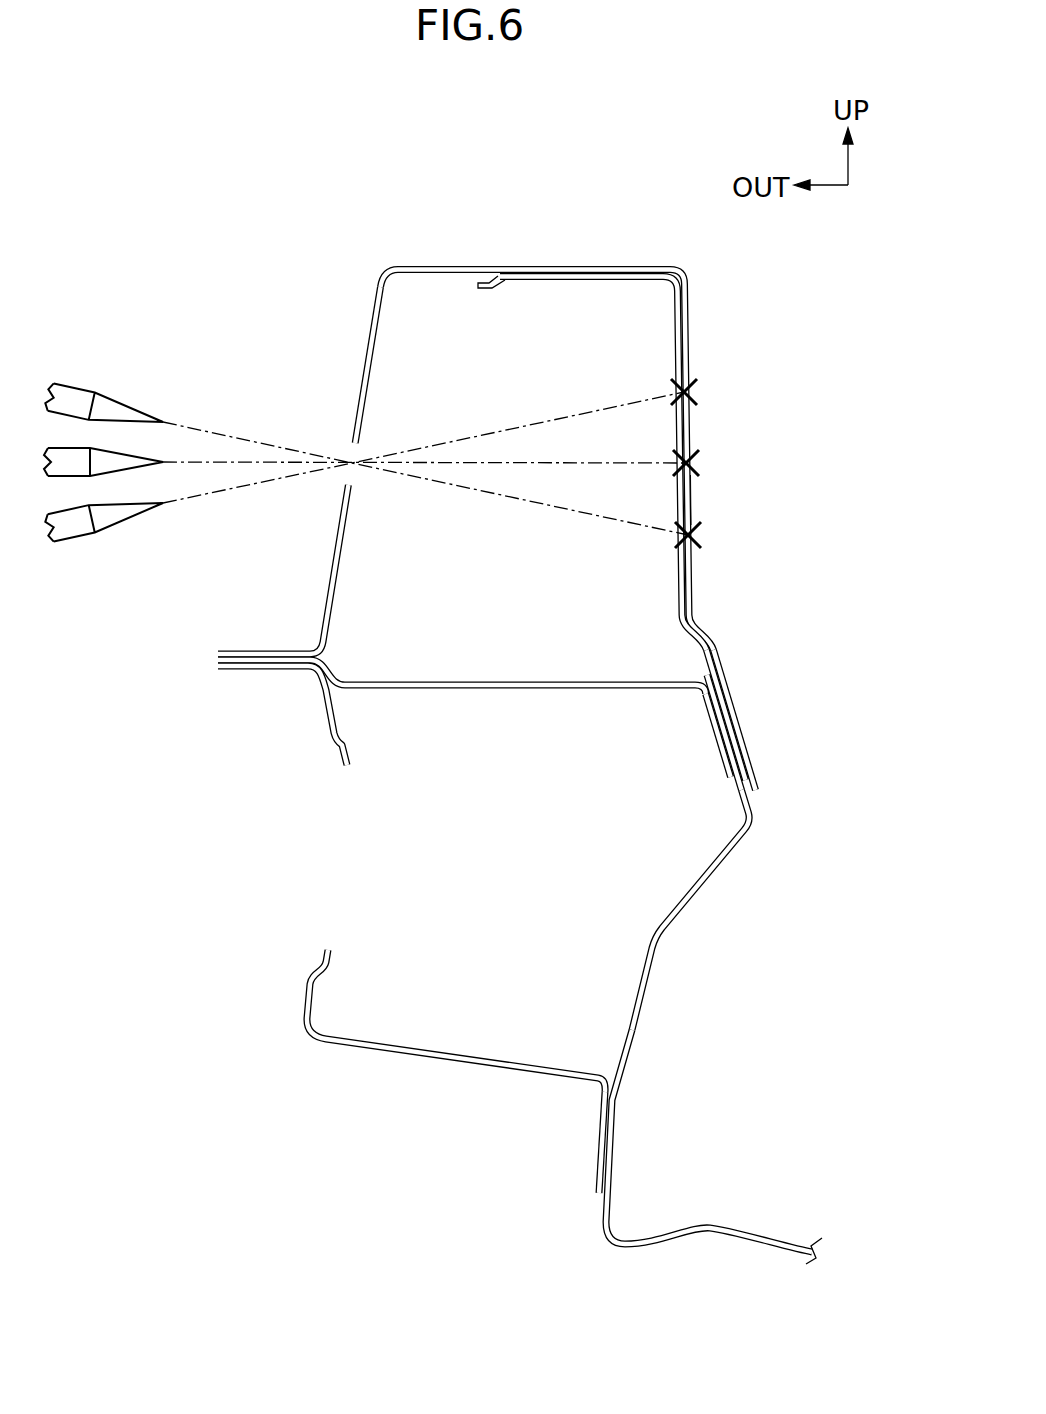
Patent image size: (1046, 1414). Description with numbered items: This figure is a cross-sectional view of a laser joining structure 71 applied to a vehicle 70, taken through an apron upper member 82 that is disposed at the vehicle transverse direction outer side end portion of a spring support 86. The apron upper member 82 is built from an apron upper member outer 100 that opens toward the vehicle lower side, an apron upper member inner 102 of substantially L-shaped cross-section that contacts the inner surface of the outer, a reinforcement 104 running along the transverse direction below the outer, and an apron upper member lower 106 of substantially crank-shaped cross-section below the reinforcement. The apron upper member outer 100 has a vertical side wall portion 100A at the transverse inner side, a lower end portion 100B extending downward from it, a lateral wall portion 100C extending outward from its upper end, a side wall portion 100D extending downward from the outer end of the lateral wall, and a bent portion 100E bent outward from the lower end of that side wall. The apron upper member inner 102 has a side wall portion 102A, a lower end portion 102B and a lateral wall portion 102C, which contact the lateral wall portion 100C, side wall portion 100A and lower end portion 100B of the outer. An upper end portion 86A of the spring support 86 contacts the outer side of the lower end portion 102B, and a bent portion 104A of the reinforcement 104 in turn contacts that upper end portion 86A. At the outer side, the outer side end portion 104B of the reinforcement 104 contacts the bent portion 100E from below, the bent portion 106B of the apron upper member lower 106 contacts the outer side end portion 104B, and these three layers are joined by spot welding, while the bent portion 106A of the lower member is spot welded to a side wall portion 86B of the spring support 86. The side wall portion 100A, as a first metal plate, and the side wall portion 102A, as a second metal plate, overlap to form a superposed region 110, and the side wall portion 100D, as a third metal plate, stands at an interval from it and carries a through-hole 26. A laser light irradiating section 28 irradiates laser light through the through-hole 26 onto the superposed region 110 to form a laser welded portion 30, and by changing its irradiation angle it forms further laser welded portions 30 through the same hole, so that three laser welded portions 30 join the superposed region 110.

The through-hole 26 is at (358, 447).
The laser light irradiating section 28 is at (98, 385).
The laser welded portion 30 is at (697, 390).
The vehicle 70 is at (418, 213).
The laser joining structure 71 is at (752, 360).
The apron upper member 82 is at (712, 308).
The spring support 86 is at (648, 1004).
The upper end portion 86A is at (718, 718).
The side wall portion 86B is at (630, 1063).
The apron upper member outer 100 is at (470, 266).
The side wall portion 100A is at (697, 425).
The lower end portion 100B is at (736, 690).
The lateral wall portion 100C is at (567, 265).
The side wall portion 100D is at (372, 350).
The bent portion 100E is at (258, 648).
The apron upper member inner 102 is at (683, 594).
The side wall portion 102A is at (672, 355).
The lower end portion 102B is at (750, 762).
The lateral wall portion 102C is at (575, 282).
The reinforcement 104 is at (545, 690).
The bent portion 104A is at (730, 770).
The outer side end portion 104B is at (218, 658).
The apron upper member lower 106 is at (418, 1063).
The bent portion 106A is at (593, 1140).
The bent portion 106B is at (254, 670).
The superposed region 110 is at (697, 505).